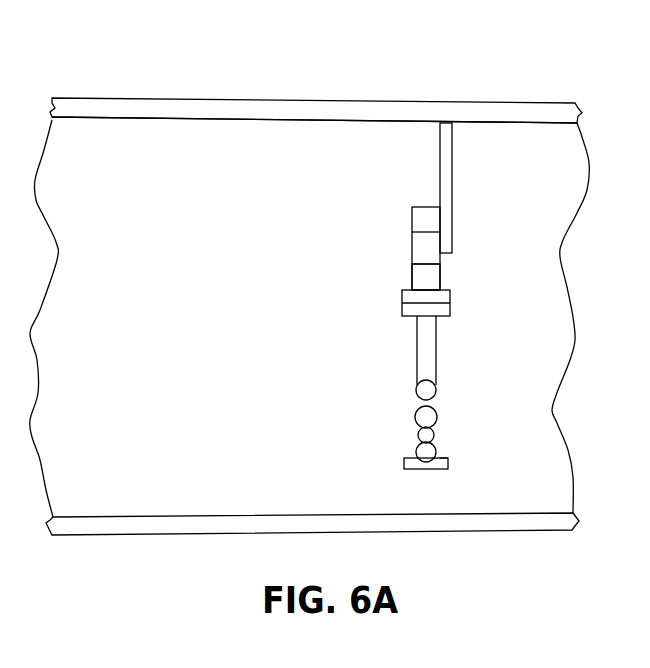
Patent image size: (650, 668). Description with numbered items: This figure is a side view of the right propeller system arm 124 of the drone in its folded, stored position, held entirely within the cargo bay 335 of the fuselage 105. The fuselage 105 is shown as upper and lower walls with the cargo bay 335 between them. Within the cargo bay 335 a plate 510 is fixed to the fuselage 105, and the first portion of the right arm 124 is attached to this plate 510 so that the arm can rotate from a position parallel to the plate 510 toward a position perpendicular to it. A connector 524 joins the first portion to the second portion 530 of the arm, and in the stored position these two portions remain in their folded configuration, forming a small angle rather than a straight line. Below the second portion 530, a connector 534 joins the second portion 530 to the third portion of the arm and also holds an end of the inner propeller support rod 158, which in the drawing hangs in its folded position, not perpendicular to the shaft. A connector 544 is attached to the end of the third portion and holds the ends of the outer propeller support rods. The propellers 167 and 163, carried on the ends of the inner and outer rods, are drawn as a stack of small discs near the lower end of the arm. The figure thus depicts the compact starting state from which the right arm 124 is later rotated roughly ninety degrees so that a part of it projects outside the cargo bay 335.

The fuselage 105 is at (420, 100).
The plate 510 is at (452, 170).
The connector 524 is at (412, 240).
The second portion 530 is at (413, 270).
The connector 534 is at (402, 307).
The propeller support rod 158 is at (440, 360).
The propeller 167 is at (417, 383).
The propeller 163 is at (417, 455).
The right propeller system arm 124 is at (425, 470).
The connector 544 is at (448, 466).
The cargo bay 335 is at (463, 508).